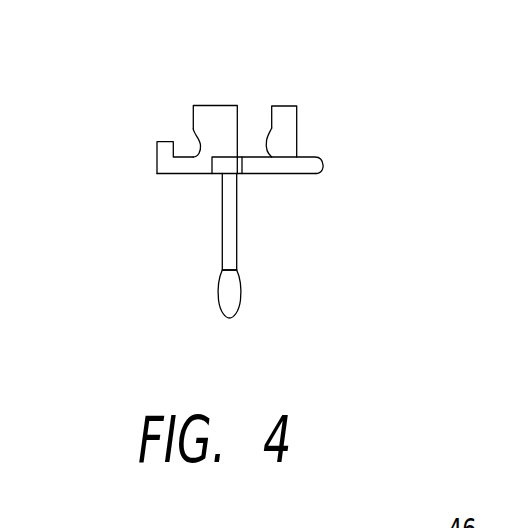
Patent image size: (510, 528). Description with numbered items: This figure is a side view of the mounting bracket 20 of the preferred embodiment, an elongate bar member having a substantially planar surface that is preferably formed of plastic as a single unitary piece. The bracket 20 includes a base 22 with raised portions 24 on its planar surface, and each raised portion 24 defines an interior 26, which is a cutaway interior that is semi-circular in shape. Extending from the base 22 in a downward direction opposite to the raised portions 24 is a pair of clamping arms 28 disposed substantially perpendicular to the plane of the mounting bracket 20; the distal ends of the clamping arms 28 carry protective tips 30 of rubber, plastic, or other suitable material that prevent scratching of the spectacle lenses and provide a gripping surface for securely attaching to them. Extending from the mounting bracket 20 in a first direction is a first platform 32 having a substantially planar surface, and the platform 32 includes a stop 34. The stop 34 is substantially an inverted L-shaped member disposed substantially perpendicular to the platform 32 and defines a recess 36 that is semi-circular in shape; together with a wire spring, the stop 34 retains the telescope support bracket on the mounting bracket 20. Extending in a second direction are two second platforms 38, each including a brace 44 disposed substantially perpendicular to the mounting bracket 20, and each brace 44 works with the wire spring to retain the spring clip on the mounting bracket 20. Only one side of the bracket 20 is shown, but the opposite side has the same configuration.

The mounting bracket 20 is at (146, 104).
The base 22 is at (316, 157).
The raised portions 24 is at (213, 106).
The interior 26 is at (186, 136).
The clamping arms 28 is at (237, 230).
The protective tips 30 is at (218, 290).
The first platform 32 is at (330, 175).
The stop 34 is at (297, 106).
The recess 36 is at (268, 145).
The second platforms 38 is at (168, 175).
The brace 44 is at (157, 144).